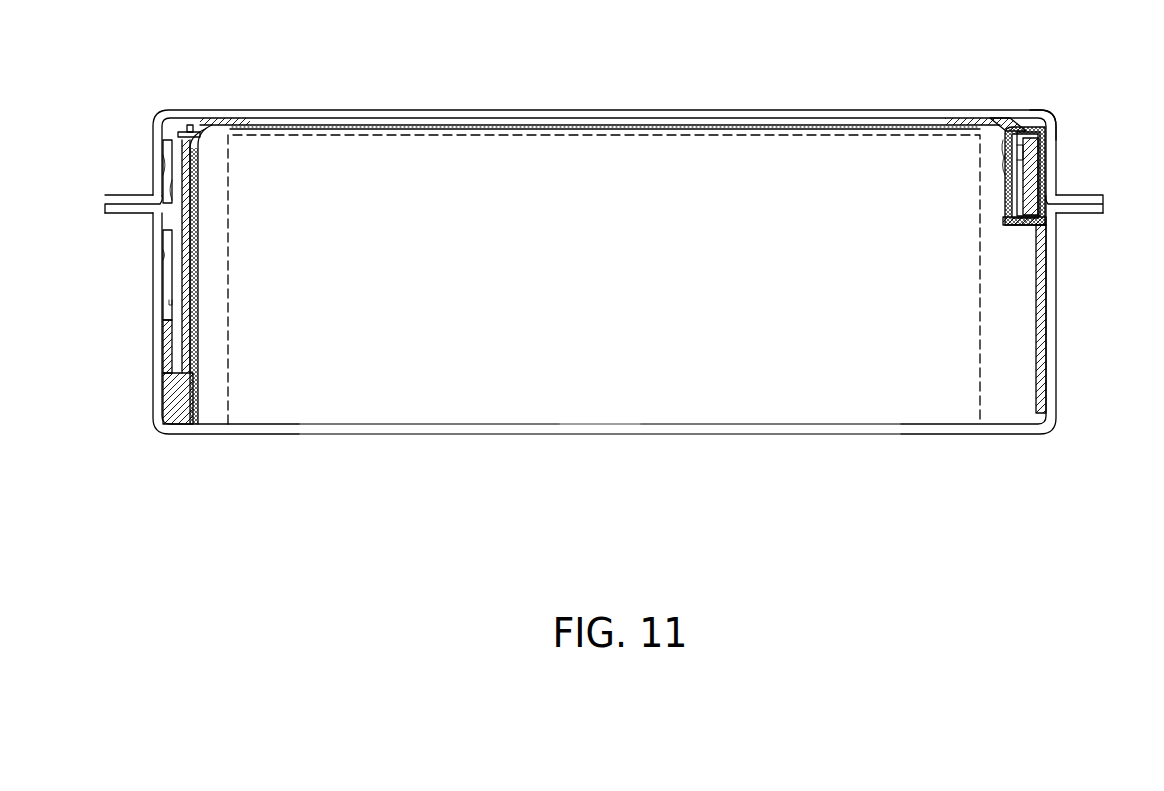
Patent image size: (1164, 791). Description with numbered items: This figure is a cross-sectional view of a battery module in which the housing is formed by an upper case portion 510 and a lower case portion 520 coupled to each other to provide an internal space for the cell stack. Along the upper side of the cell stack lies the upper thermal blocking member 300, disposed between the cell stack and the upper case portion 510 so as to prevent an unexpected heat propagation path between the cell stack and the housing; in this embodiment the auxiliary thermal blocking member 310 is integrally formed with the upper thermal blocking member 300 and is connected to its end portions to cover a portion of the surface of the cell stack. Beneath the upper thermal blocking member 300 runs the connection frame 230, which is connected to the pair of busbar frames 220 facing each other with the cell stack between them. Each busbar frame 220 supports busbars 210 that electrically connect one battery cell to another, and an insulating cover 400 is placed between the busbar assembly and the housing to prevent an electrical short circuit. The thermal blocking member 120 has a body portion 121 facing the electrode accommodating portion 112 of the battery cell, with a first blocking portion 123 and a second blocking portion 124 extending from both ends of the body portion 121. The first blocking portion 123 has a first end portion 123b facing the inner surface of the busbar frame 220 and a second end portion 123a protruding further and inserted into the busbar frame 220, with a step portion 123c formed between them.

The upper case portion 510 is at (170, 120).
The lower case portion 520 is at (162, 437).
The first blocking portion 123 is at (993, 383).
The body portion 121 is at (475, 392).
The electrode accommodating portion 112 is at (602, 390).
The connection frame 230 is at (581, 120).
The upper thermal blocking member 300 is at (638, 128).
The thermal blocking member 120 is at (728, 398).
The second blocking portion 124 is at (217, 413).
The busbar frame 220 is at (990, 123).
The auxiliary thermal blocking member 310 is at (1043, 111).
The insulating cover 400 is at (1047, 142).
The first end portion 123b is at (1028, 183).
The step portion 123c is at (1010, 227).
The second end portion 123a is at (1037, 353).
The busbar 210 is at (185, 353).